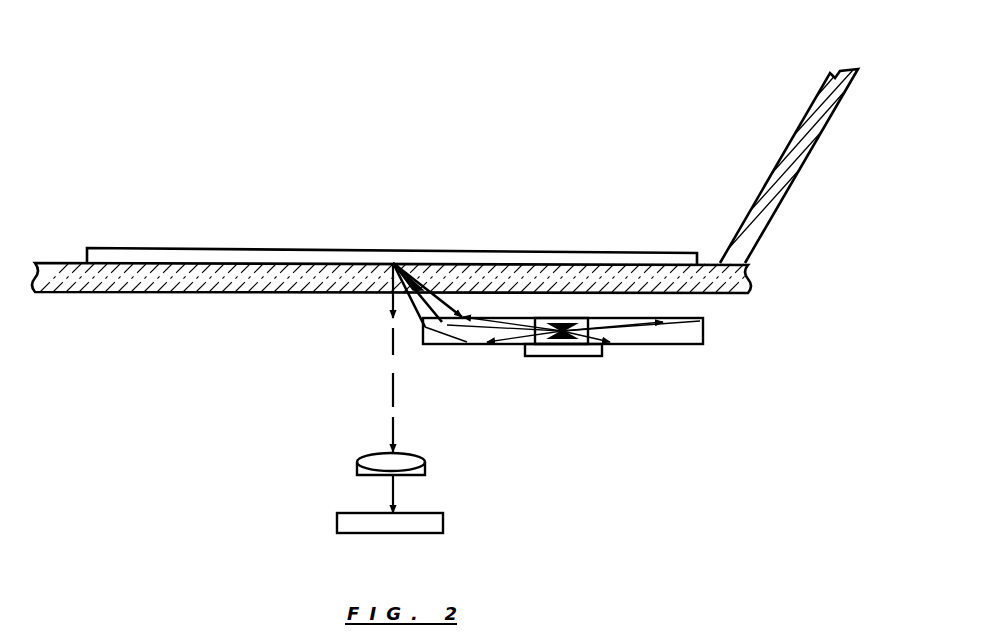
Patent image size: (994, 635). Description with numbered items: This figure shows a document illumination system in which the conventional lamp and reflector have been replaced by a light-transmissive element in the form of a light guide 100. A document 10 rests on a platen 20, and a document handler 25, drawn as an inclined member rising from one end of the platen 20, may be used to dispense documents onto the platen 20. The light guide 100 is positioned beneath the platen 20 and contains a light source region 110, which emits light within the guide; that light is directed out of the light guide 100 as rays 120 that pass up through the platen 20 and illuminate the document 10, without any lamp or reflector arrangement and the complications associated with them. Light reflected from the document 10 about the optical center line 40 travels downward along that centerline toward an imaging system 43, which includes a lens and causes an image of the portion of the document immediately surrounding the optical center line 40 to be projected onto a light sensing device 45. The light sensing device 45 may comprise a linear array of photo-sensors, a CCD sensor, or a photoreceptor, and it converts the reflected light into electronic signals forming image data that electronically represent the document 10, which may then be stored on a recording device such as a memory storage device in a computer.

The document 10 is at (603, 262).
The platen 20 is at (748, 280).
The document handler 25 is at (738, 263).
The optical center line 40 is at (395, 405).
The imaging system 43 is at (423, 455).
The light sensing device 45 is at (443, 517).
The light guide 100 is at (692, 338).
The light source region 110 is at (568, 345).
The rays 120 is at (413, 298).